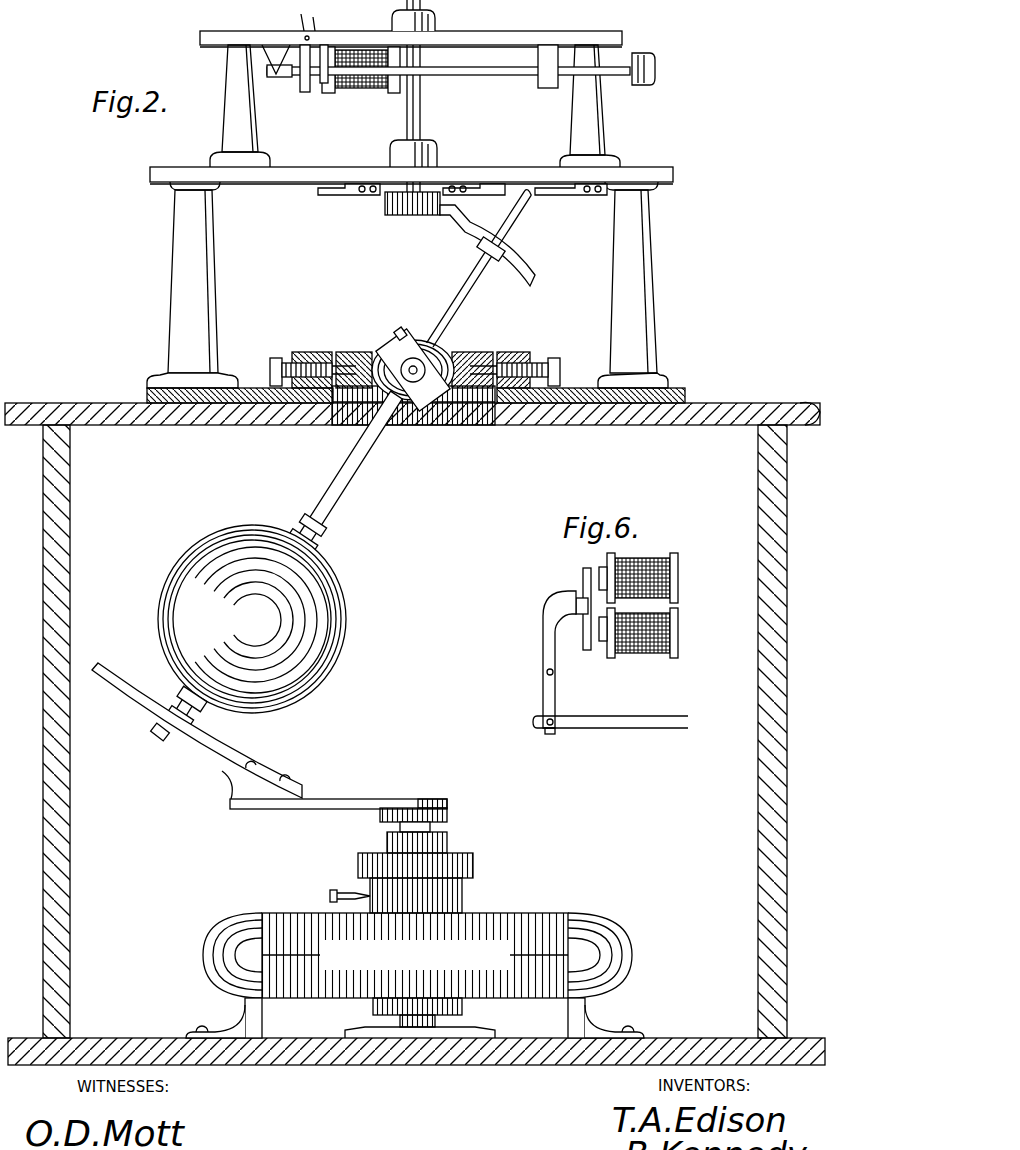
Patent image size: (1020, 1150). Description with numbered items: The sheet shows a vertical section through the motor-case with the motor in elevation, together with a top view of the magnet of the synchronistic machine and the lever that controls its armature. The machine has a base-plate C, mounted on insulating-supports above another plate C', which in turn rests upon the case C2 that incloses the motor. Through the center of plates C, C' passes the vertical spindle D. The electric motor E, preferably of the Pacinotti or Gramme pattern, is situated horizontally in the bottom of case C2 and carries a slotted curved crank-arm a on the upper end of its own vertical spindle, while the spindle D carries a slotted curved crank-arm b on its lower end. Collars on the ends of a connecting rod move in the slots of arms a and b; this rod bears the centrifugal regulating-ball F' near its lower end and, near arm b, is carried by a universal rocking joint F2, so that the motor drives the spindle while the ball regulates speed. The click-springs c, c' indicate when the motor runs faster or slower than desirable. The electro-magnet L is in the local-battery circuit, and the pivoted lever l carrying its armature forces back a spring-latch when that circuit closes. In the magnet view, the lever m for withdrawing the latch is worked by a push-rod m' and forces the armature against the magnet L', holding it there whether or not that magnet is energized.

In FIG. 2, the base-plate C is at (411, 27).
In FIG. 2, the plate C' is at (432, 168).
In FIG. 2, the case C2 is at (748, 403).
In FIG. 2, the vertical spindle D is at (420, 108).
In FIG. 2, the electro-magnet L is at (361, 80).
In FIG. 2, the pivoted lever l is at (305, 93).
In FIG. 6, the pivoted lever l is at (577, 597).
In FIG. 2, the click-spring c' is at (411, 203).
In FIG. 2, the click-spring c is at (571, 203).
In FIG. 2, the slotted curved crank-arm b is at (536, 278).
In FIG. 2, the universal rocking joint F2 is at (394, 336).
In FIG. 2, the centrifugal regulating-ball F' is at (344, 473).
In FIG. 2, the disk F'' is at (267, 626).
In FIG. 2, the slotted curved crank-arm a is at (268, 772).
In FIG. 2, the electric motor E is at (490, 902).
In FIG. 6, the magnet L' is at (653, 605).
In FIG. 6, the lever m is at (549, 659).
In FIG. 6, the push-rod m' is at (610, 714).